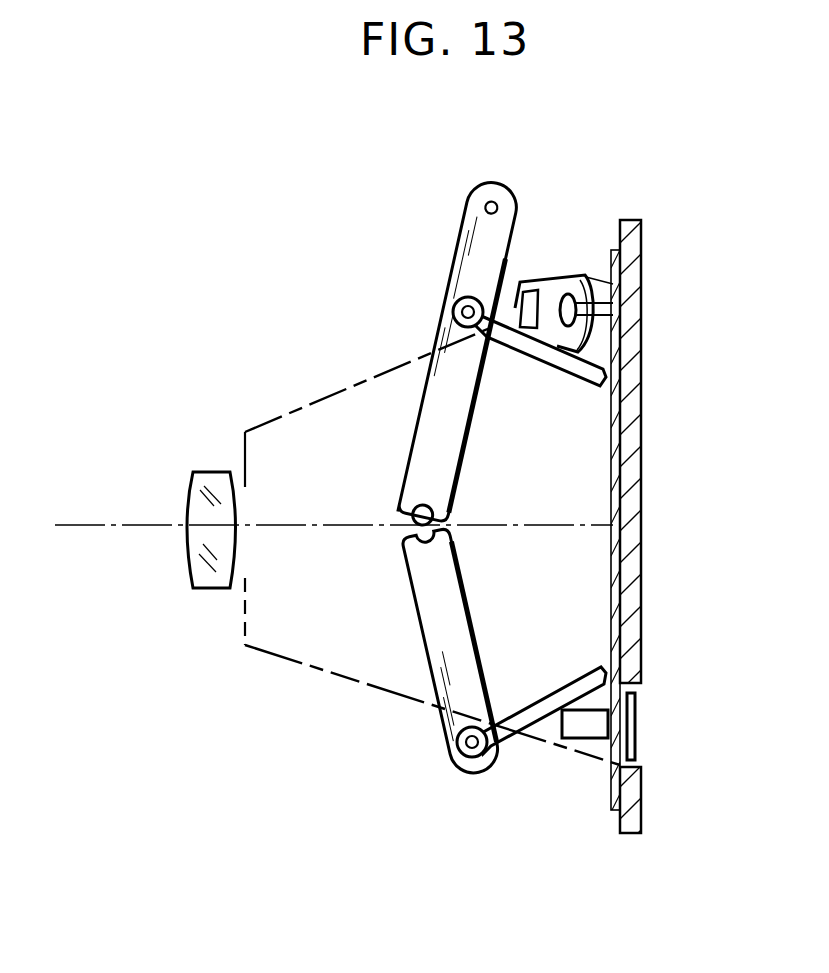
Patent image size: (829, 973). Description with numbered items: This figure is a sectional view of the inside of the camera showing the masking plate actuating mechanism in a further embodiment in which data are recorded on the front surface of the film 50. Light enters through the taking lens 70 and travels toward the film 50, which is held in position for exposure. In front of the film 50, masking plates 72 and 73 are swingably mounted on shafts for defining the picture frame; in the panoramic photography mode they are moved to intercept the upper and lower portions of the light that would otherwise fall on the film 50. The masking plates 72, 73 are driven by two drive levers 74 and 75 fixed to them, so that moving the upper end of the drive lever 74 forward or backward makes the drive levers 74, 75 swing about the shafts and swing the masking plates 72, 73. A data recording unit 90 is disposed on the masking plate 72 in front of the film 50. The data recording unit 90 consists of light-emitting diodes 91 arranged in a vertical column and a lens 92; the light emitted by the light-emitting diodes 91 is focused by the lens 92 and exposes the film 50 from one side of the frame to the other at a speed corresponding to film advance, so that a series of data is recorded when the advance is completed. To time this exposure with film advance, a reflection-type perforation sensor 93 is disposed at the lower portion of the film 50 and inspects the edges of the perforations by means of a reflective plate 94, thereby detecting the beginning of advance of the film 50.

The film 50 is at (612, 596).
The taking lens 70 is at (210, 590).
The masking plate 72 is at (550, 366).
The masking plate 73 is at (537, 719).
The drive lever 74 is at (427, 385).
The drive lever 75 is at (427, 667).
The data recording unit 90 is at (563, 238).
The light-emitting diodes 91 is at (521, 293).
The lens 92 is at (598, 303).
The perforation sensor 93 is at (588, 740).
The reflective plate 94 is at (636, 730).